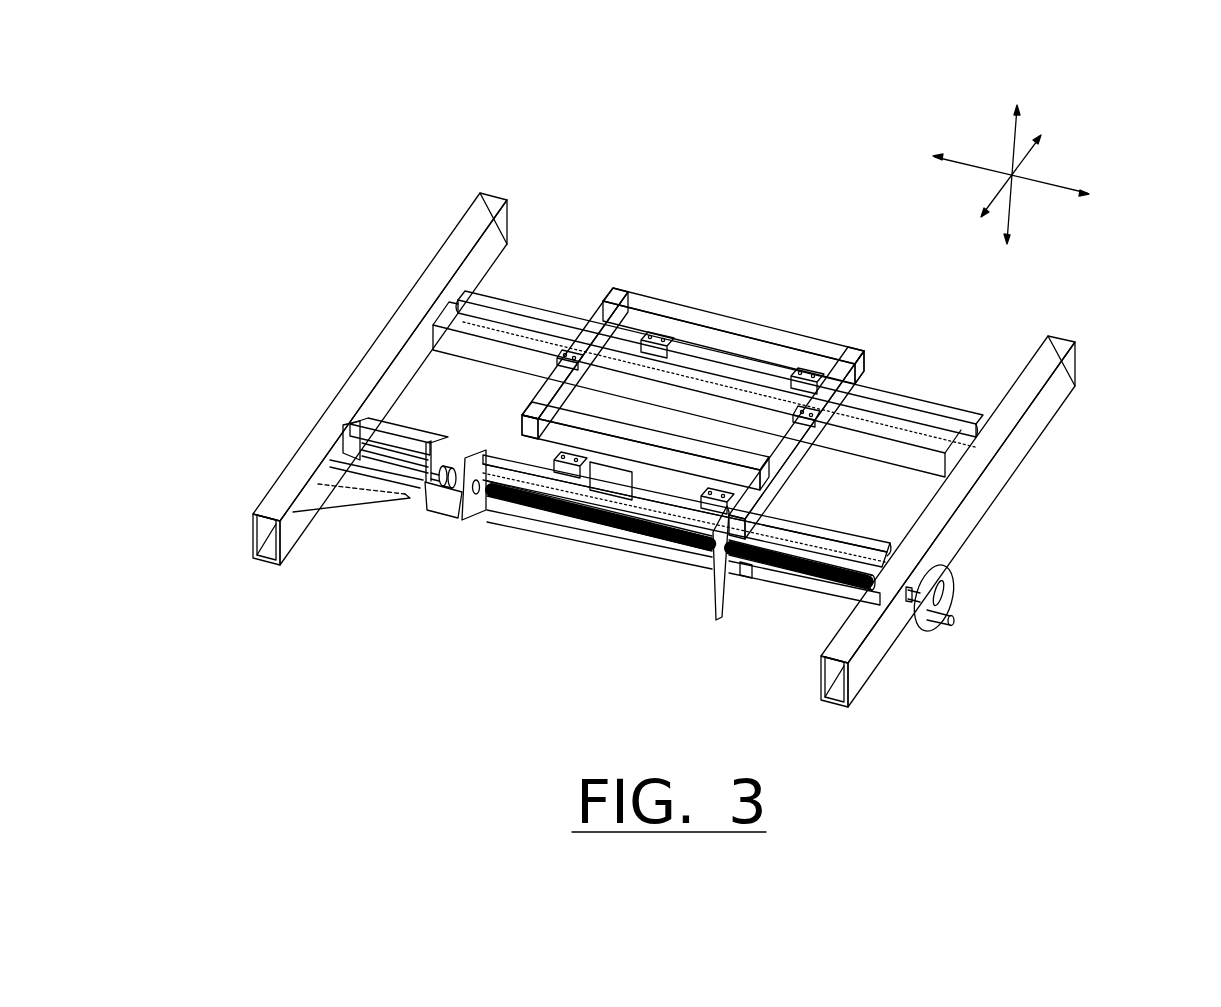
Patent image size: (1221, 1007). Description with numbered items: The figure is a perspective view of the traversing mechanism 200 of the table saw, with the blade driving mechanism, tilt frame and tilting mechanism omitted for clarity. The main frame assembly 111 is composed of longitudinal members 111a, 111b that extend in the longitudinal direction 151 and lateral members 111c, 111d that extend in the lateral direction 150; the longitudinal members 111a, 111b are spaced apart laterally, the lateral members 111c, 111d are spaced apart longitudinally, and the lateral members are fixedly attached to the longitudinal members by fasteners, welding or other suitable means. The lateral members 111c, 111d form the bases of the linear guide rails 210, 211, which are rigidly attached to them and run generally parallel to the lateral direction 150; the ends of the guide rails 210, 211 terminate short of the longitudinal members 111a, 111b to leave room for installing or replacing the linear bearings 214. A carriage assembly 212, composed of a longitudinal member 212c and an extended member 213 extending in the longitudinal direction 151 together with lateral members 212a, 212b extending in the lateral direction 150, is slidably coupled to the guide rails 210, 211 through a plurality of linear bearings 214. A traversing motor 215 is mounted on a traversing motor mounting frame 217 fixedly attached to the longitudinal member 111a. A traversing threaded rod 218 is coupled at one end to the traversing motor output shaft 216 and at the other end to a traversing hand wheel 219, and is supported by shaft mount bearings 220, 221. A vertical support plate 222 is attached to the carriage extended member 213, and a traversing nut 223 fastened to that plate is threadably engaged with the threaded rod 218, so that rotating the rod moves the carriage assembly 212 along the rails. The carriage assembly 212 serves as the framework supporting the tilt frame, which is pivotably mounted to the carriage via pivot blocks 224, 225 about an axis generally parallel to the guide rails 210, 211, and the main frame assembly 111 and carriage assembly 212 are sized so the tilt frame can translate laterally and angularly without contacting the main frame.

The main frame assembly 111 is at (872, 685).
The longitudinal member 111a is at (291, 488).
The longitudinal member 111b is at (1048, 410).
The lateral member 111c is at (888, 432).
The lateral member 111d is at (815, 580).
The lateral direction 150 is at (1060, 187).
The longitudinal direction 151 is at (1029, 140).
The traversing mechanism 200 is at (565, 285).
The linear guide rail 210 is at (497, 295).
The linear guide rail 211 is at (392, 443).
The carriage assembly 212 is at (780, 321).
The lateral member 212a is at (657, 302).
The lateral member 212b is at (573, 475).
The longitudinal member 212c is at (545, 378).
The carriage extended member 213 is at (757, 502).
The linear bearings 214 is at (641, 332).
The traversing motor 215 is at (374, 443).
The traversing motor output shaft 216 is at (445, 522).
The traversing motor mounting frame 217 is at (405, 506).
The traversing threaded rod 218 is at (628, 466).
The traversing hand wheel 219 is at (928, 632).
The shaft mount bearing 220 is at (481, 525).
The shaft mount bearing 221 is at (858, 588).
The vertical support plate 222 is at (708, 605).
The traversing nut 223 is at (700, 530).
The pivot block 224 is at (452, 305).
The pivot block 225 is at (823, 417).